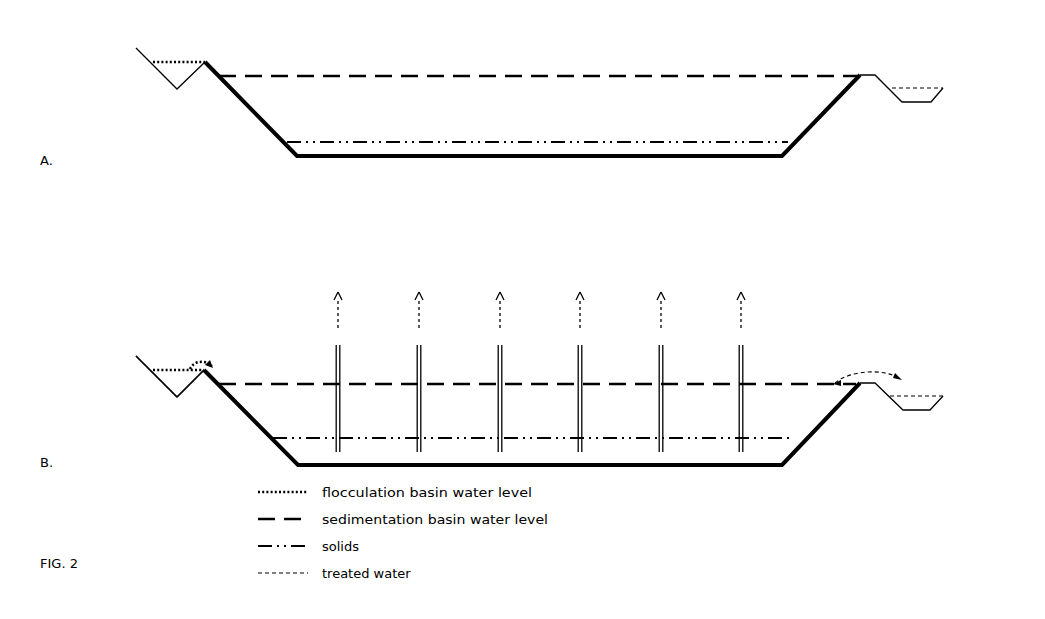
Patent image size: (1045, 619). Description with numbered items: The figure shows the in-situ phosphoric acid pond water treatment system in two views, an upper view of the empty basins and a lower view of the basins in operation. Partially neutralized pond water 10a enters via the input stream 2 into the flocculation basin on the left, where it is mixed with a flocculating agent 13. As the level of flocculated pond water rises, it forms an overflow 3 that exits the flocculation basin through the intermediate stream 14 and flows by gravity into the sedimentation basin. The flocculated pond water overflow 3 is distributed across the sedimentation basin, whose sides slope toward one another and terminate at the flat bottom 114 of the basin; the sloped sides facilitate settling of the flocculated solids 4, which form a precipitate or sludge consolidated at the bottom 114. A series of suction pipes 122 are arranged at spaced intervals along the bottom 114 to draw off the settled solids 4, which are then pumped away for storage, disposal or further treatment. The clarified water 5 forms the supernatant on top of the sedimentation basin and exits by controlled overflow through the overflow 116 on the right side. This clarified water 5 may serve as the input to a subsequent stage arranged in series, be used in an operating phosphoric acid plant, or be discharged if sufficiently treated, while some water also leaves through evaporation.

The input stream 2 is at (150, 330).
The overflow 3 is at (217, 358).
The flocculated solids 4 is at (753, 318).
The clarified water 5 is at (899, 377).
The partially neutralized pond water 10a is at (149, 356).
The flocculating agent 13 is at (79, 357).
The intermediate stream 14 is at (217, 330).
The bottom of the basin 114 is at (688, 466).
The overflow 116 is at (876, 343).
The suction pipes 122 is at (335, 358).